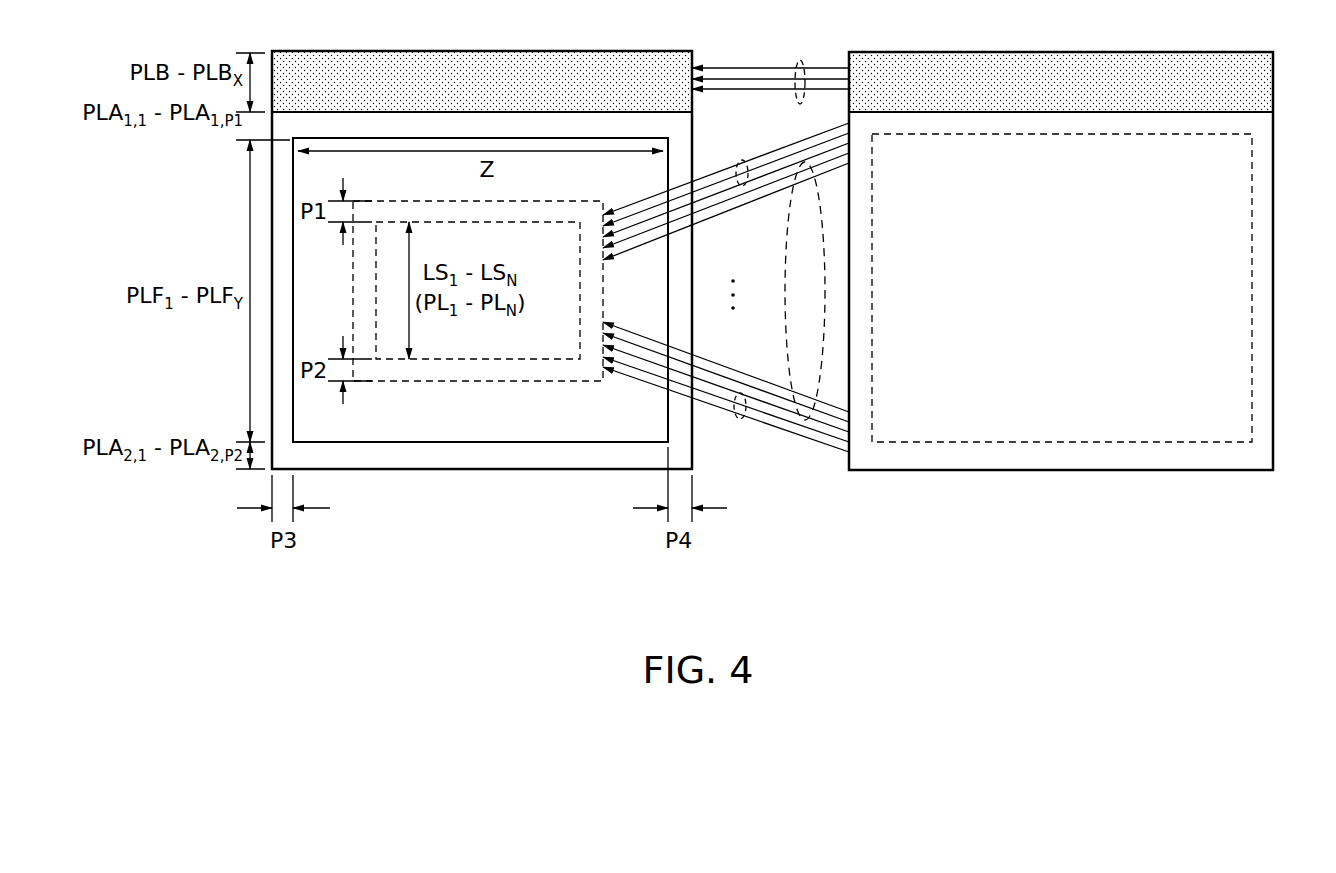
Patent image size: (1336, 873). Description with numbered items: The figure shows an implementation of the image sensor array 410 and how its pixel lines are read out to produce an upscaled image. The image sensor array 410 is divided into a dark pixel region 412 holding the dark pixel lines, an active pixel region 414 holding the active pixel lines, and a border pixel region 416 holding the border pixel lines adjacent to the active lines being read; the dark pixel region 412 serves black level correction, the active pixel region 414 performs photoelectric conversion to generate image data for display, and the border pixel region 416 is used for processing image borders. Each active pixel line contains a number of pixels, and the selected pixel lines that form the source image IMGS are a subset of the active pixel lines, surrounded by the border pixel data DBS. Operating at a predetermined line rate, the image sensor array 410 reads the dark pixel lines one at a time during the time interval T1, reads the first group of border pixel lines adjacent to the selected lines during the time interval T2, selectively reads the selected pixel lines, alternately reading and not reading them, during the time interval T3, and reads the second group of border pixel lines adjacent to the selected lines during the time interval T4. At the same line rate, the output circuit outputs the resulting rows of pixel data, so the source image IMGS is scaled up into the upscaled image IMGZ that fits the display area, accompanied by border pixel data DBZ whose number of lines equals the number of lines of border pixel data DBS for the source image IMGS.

The image sensor array 410 is at (647, 50).
The dark pixel region 412 is at (473, 60).
The active pixel region 414 is at (382, 425).
The border pixel region 416 is at (438, 462).
The time interval T1 is at (800, 62).
The time interval T2 is at (740, 158).
The time interval T3 is at (785, 280).
The time interval T4 is at (737, 428).
The border pixel data DBS is at (479, 370).
The source image IMGS is at (543, 360).
The upscaled image IMGZ is at (1003, 442).
The border pixel data DBZ is at (1113, 460).